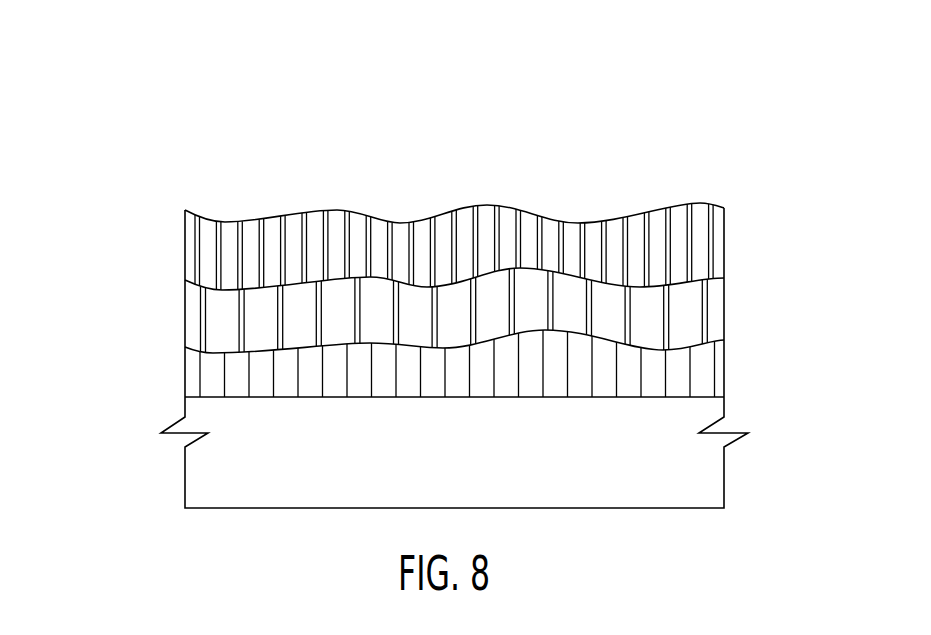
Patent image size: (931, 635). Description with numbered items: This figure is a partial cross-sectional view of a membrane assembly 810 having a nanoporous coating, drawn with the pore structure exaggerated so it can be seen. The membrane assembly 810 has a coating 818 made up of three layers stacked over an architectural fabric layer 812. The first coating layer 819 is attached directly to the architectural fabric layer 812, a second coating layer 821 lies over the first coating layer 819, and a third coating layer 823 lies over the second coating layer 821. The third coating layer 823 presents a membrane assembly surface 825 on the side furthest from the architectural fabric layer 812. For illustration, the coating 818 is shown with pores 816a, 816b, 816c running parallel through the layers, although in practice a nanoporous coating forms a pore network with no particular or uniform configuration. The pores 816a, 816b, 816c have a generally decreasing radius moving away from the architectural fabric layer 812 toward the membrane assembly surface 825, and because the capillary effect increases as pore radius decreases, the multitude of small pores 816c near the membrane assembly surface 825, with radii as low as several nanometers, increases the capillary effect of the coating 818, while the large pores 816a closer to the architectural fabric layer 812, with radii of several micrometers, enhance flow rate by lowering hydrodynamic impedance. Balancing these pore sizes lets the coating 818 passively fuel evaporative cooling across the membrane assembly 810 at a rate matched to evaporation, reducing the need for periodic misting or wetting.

The membrane assembly 810 is at (256, 141).
The architectural fabric layer 812 is at (700, 413).
The pores 816a is at (210, 380).
The pores 816b is at (202, 310).
The pores 816c is at (196, 248).
The coating 818 is at (739, 310).
The first coating layer 819 is at (600, 352).
The second coating layer 821 is at (500, 297).
The third coating layer 823 is at (425, 230).
The membrane assembly surface 825 is at (333, 212).